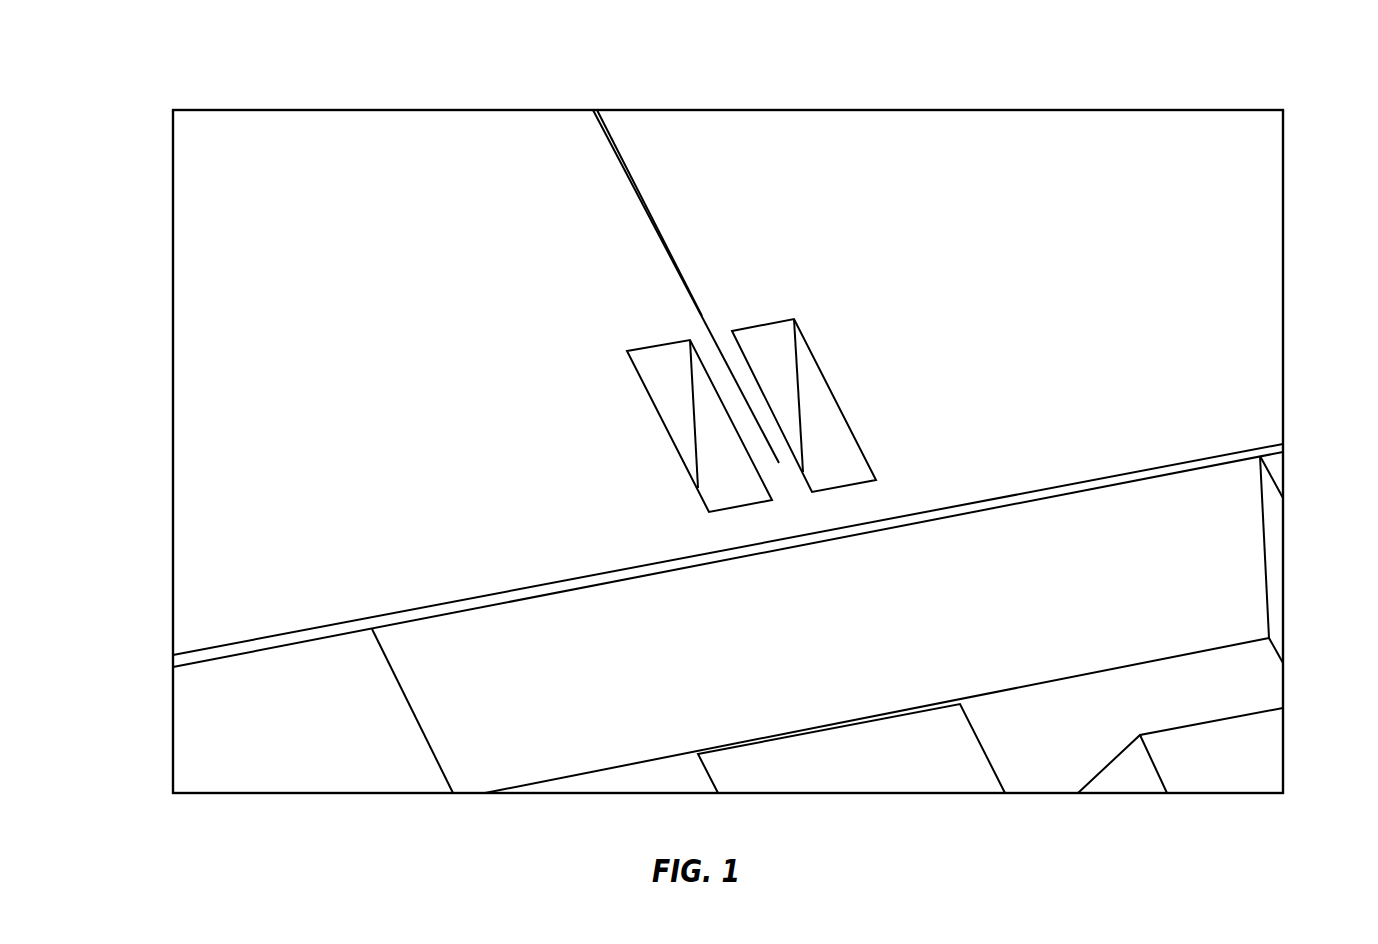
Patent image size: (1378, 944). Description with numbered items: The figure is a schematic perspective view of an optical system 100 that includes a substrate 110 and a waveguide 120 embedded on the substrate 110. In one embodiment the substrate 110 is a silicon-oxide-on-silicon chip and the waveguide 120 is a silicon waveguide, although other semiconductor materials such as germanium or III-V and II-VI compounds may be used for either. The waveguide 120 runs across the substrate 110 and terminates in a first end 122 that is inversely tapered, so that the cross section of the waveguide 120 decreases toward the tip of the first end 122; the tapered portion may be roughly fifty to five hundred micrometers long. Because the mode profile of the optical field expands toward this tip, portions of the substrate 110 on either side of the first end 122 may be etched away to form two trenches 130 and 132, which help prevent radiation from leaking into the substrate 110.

The optical system 100 is at (483, 71).
The substrate 110 is at (1265, 377).
The waveguide 120 is at (677, 268).
The first end 122 is at (742, 393).
The trench 130 is at (837, 438).
The trench 132 is at (668, 400).